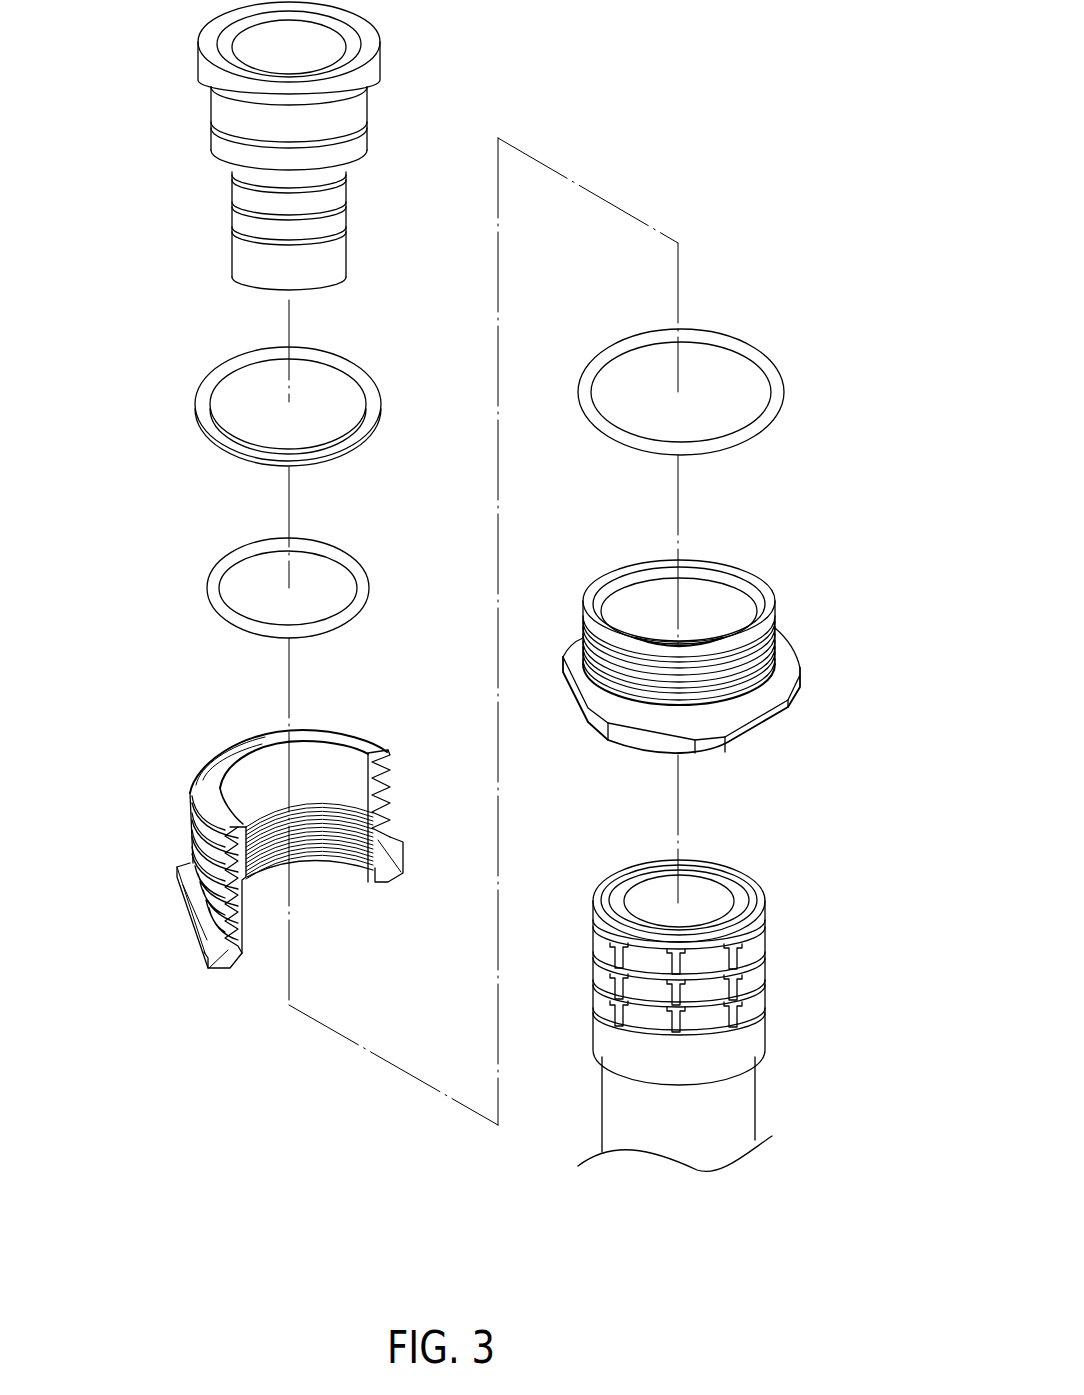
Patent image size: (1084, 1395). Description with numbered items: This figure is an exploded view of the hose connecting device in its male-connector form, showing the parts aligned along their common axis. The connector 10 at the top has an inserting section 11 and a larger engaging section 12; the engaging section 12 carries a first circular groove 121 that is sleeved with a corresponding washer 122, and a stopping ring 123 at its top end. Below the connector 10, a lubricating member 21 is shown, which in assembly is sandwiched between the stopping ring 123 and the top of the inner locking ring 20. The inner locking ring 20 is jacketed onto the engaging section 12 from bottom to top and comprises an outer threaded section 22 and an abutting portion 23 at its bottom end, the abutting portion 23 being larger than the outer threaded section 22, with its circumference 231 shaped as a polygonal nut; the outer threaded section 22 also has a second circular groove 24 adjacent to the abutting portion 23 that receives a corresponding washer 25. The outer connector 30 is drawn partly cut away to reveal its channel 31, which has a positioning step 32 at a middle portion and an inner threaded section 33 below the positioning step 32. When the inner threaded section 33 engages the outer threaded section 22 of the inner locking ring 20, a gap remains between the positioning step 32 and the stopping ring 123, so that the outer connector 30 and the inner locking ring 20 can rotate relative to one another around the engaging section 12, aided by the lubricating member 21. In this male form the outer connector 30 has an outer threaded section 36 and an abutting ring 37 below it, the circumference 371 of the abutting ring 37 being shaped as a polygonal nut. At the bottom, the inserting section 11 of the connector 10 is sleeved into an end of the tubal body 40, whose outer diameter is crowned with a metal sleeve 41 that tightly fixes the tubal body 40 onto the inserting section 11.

The connector 10 is at (216, 146).
The inserting section 11 is at (258, 238).
The engaging section 12 is at (245, 120).
The first circular groove 121 is at (252, 148).
The washer 122 is at (360, 583).
The stopping ring 123 is at (210, 53).
The inner locking ring 20 is at (740, 678).
The lubricating member 21 is at (200, 397).
The outer threaded section 22 is at (777, 628).
The abutting portion 23 is at (775, 672).
The circumference 231 is at (787, 697).
The second circular groove 24 is at (735, 702).
The washer 25 is at (782, 392).
The outer connector 30 is at (255, 849).
The channel 31 is at (340, 773).
The positioning step 32 is at (375, 817).
The inner threaded section 33 is at (337, 840).
The outer threaded section 36 is at (192, 863).
The abutting ring 37 is at (213, 925).
The circumference 371 is at (193, 952).
The tubal body 40 is at (764, 1015).
The metal sleeve 41 is at (752, 977).